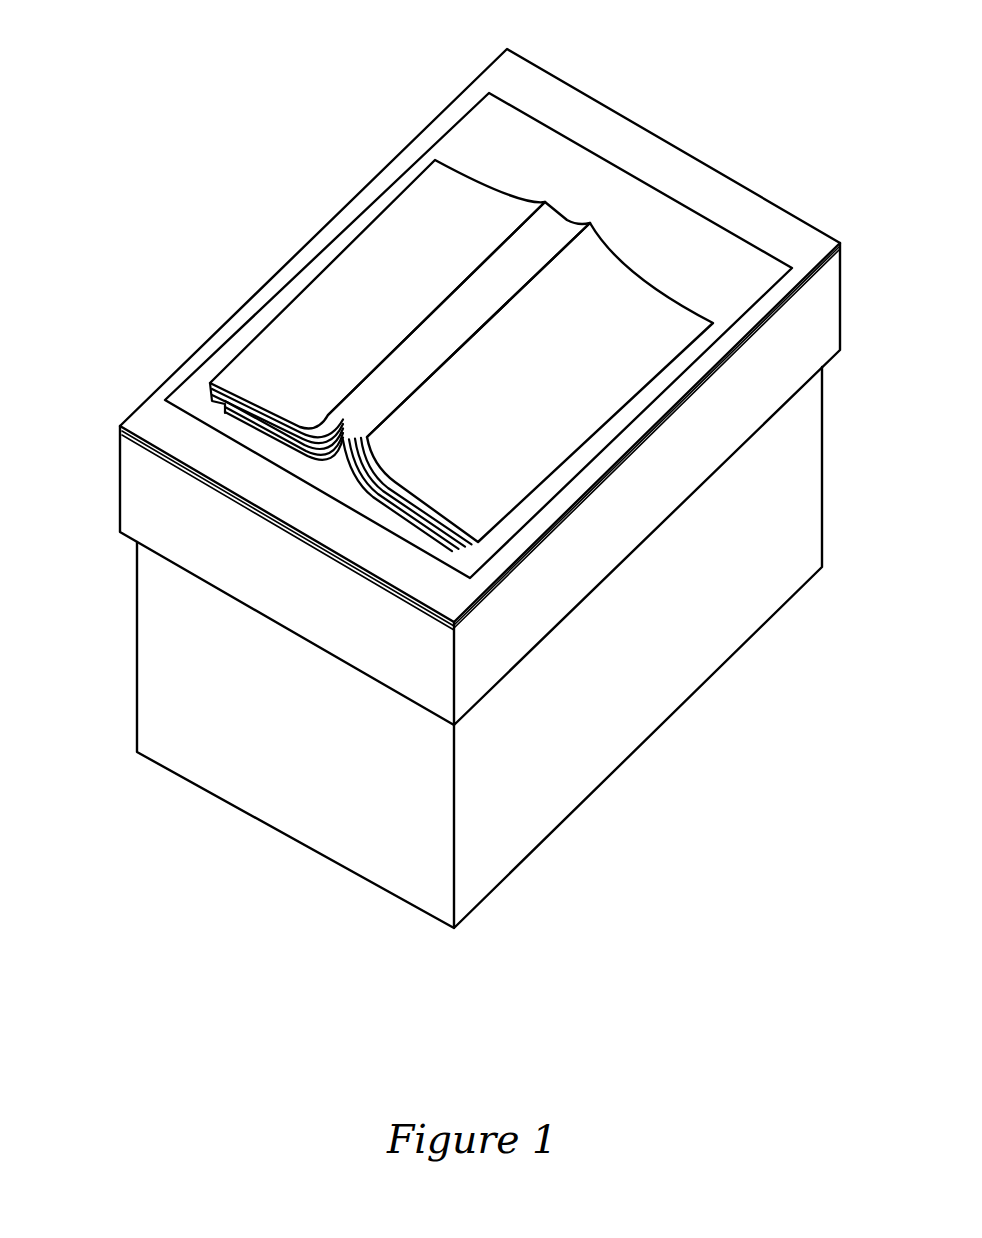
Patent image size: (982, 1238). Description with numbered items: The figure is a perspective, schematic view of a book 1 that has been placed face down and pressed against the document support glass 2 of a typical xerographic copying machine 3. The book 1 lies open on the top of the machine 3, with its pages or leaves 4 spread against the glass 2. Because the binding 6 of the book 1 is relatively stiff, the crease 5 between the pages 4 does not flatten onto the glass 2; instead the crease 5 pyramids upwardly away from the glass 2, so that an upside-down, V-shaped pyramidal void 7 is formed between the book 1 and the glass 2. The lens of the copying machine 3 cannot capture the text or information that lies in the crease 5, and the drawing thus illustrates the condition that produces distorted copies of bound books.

The book 1 is at (623, 303).
The document support glass 2 is at (730, 277).
The xerographic copying machine 3 is at (656, 641).
The book pages 4 is at (263, 437).
The crease 5 is at (345, 432).
The binding 6 is at (540, 240).
The pyramidal void 7 is at (343, 442).